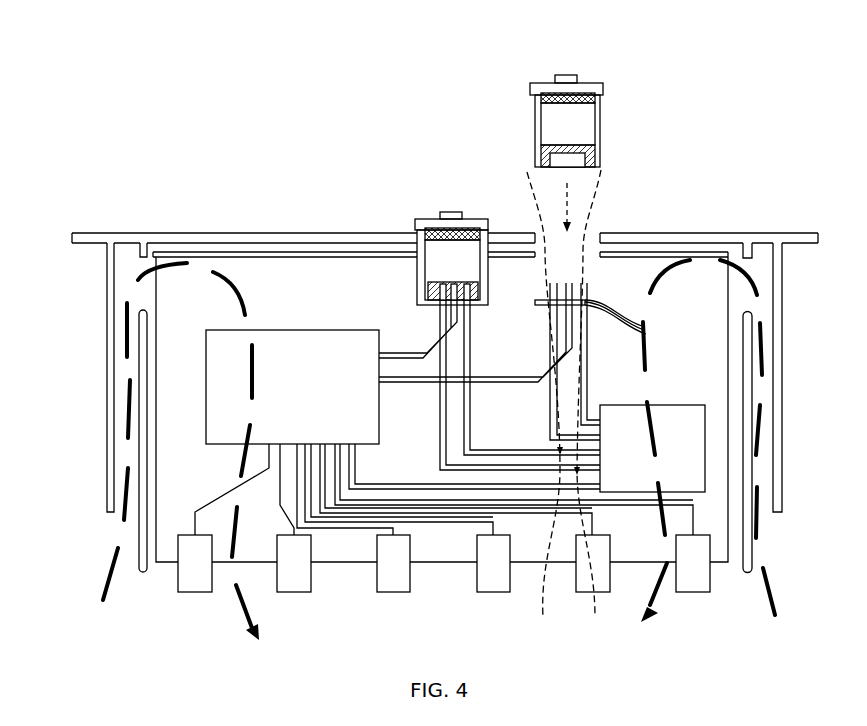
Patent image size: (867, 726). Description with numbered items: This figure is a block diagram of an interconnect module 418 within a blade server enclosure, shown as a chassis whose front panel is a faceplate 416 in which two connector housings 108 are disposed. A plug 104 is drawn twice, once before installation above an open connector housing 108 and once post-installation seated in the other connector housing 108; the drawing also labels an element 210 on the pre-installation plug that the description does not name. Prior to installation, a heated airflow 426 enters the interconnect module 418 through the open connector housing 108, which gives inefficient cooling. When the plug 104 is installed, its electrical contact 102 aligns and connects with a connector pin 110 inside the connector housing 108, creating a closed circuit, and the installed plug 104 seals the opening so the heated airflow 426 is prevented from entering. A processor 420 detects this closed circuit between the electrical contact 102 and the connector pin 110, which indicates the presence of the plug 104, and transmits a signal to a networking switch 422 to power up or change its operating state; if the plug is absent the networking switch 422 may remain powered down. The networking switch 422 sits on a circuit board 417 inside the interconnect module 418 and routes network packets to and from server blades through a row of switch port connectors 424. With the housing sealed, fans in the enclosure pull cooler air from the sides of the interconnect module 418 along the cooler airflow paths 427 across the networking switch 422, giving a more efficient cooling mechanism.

The electrical contact 102 is at (637, 112).
The plug 104 is at (350, 160).
The connector housing 108 is at (430, 300).
The connector pin 110 is at (644, 328).
The flange 210 is at (530, 92).
The faceplate 416 is at (72, 236).
The circuit board 417 is at (150, 291).
The interconnect module 418 is at (107, 452).
The processor 420 is at (705, 412).
The networking switch 422 is at (206, 378).
The switch port connector 424 is at (198, 608).
The heated airflow 426 is at (586, 194).
The cooler airflow path 427 is at (118, 552).